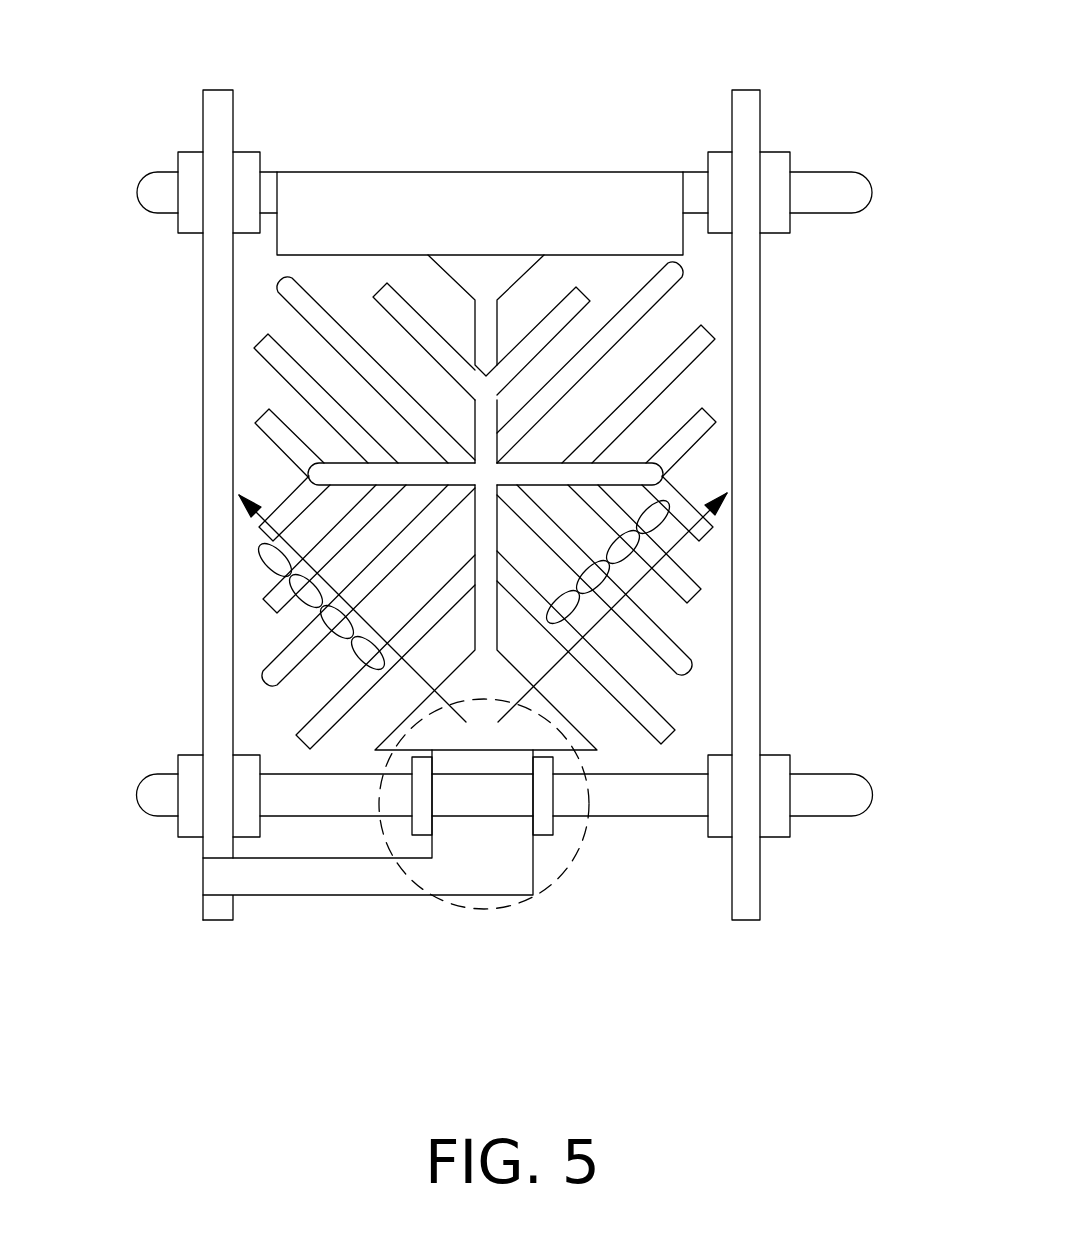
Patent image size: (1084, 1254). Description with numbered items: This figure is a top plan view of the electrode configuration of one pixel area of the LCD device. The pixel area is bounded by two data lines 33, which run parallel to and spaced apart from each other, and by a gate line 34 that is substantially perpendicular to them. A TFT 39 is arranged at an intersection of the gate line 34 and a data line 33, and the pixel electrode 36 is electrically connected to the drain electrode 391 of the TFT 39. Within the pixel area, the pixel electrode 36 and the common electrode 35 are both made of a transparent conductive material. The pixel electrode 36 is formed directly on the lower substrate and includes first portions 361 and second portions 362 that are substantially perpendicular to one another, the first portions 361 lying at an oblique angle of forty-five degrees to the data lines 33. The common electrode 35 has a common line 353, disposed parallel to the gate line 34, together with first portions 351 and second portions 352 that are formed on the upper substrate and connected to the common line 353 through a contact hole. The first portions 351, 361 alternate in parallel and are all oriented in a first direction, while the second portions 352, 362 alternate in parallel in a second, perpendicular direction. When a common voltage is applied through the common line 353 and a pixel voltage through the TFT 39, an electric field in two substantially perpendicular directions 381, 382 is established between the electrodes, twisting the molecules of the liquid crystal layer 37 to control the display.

The data line 33 is at (218, 108).
The gate line 34 is at (820, 805).
The common electrode 35 is at (830, 193).
The pixel electrode 36 is at (460, 856).
The liquid crystal layer 37 is at (622, 550).
The TFT 39 is at (568, 862).
The first portion of common electrode 351 is at (662, 373).
The second portion of common electrode 352 is at (292, 373).
The common line 353 is at (512, 207).
The first portion of pixel electrode 361 is at (665, 278).
The second portion of pixel electrode 362 is at (284, 293).
The first electric field direction 381 is at (635, 585).
The second electric field direction 382 is at (278, 556).
The drain electrode 391 is at (475, 767).